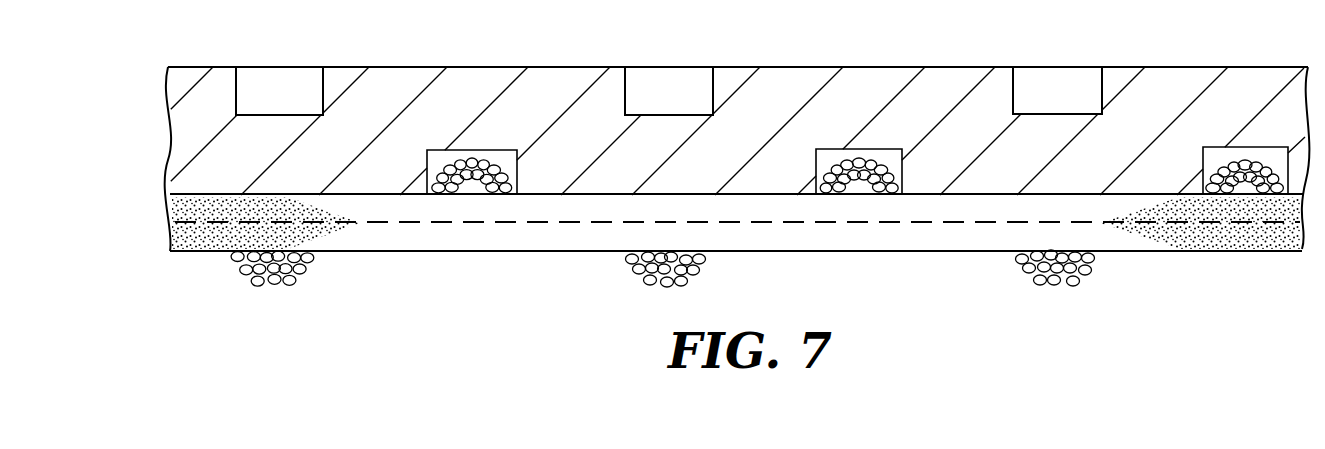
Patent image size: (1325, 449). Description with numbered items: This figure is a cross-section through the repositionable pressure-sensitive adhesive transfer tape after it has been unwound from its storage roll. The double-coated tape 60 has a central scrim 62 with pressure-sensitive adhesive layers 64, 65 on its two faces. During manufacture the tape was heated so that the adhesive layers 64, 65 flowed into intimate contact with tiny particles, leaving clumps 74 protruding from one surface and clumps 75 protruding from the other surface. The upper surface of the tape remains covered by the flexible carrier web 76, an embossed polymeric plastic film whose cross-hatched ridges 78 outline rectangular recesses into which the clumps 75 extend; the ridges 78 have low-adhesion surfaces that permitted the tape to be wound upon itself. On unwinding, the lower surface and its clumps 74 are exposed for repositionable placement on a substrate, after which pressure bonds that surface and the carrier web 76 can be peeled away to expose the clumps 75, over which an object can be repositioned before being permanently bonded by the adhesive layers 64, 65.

The double-coated tape 60 is at (700, 249).
The central scrim 62 is at (445, 225).
The pressure-sensitive adhesive layer 64 is at (170, 238).
The pressure-sensitive adhesive layer 65 is at (172, 207).
The clumps of particles 74 is at (287, 281).
The clumps of particles 75 is at (478, 160).
The flexible carrier web 76 is at (425, 65).
The ridges 78 is at (566, 184).